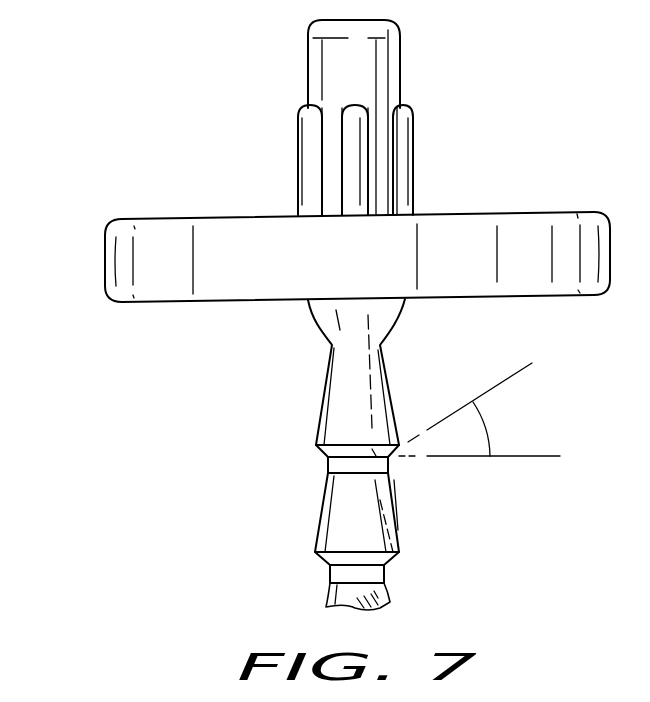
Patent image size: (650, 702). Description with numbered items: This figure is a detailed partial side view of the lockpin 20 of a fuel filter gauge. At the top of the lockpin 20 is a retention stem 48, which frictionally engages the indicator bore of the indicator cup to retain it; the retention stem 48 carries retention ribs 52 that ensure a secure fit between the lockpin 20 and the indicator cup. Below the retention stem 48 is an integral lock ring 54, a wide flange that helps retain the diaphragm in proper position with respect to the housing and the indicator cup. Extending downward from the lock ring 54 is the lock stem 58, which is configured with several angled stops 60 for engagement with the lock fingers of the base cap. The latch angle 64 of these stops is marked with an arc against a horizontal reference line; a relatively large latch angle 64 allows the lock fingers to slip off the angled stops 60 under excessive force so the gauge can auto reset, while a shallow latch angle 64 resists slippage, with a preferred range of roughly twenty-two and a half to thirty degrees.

The lockpin 20 is at (321, 315).
The retention stem 48 is at (325, 63).
The retention ribs 52 is at (363, 147).
The lock ring 54 is at (282, 256).
The lock stem 58 is at (387, 518).
The angled stops 60 is at (318, 452).
The latch angle 64 is at (487, 428).